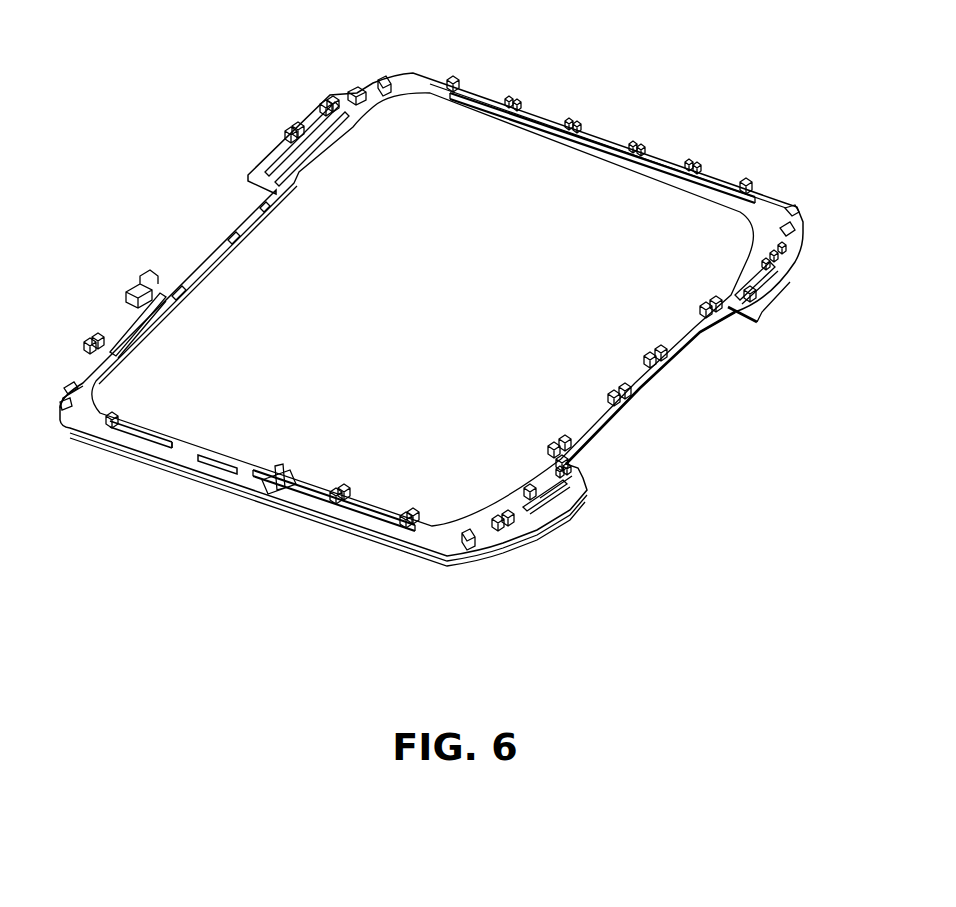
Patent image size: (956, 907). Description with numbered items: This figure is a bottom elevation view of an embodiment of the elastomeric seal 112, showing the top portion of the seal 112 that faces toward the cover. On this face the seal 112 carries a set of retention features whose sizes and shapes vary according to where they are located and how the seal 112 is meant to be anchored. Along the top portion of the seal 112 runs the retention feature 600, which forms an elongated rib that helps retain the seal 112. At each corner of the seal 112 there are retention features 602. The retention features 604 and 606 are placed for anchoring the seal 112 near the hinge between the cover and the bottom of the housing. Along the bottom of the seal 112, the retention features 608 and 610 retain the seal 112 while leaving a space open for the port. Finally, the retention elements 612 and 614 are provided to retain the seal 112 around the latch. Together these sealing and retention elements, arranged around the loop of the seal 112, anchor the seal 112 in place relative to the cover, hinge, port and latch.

The retention feature 600 is at (622, 128).
The seal 112 is at (801, 238).
The retention features 602 is at (384, 76).
The retention feature 604 is at (756, 302).
The retention feature 606 is at (722, 322).
The retention feature 608 is at (364, 518).
The retention feature 610 is at (141, 443).
The retention element 612 is at (103, 318).
The retention element 614 is at (288, 132).